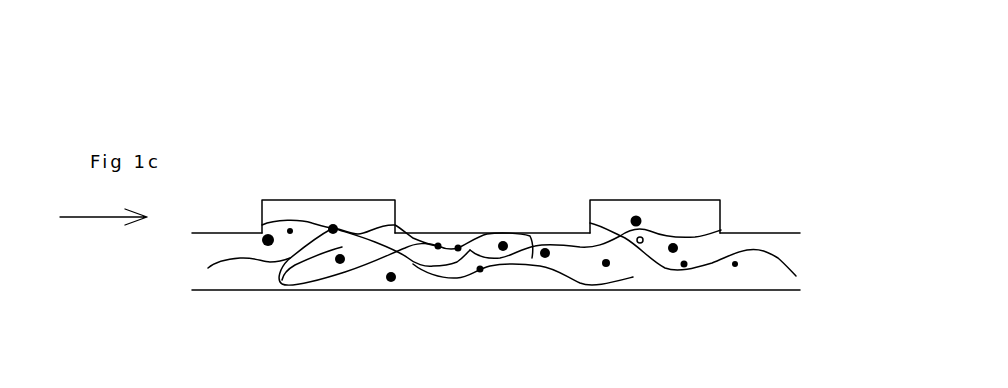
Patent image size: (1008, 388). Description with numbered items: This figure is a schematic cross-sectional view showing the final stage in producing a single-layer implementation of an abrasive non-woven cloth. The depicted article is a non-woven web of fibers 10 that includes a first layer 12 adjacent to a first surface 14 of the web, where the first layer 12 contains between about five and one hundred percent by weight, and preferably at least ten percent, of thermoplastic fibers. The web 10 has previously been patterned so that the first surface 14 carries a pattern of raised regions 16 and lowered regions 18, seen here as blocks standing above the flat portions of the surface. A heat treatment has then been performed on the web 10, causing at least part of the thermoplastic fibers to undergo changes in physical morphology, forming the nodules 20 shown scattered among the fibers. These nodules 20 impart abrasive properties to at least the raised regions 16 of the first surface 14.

The non-woven web of fibers 10 is at (777, 163).
The first layer 12 is at (633, 277).
The first surface 14 is at (86, 213).
The raised regions 16 is at (328, 210).
The lowered regions 18 is at (470, 250).
The nodules 20 is at (260, 233).